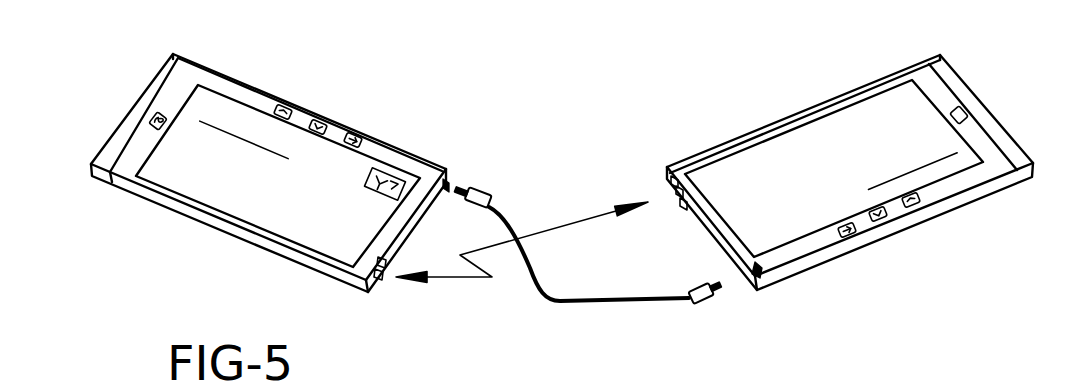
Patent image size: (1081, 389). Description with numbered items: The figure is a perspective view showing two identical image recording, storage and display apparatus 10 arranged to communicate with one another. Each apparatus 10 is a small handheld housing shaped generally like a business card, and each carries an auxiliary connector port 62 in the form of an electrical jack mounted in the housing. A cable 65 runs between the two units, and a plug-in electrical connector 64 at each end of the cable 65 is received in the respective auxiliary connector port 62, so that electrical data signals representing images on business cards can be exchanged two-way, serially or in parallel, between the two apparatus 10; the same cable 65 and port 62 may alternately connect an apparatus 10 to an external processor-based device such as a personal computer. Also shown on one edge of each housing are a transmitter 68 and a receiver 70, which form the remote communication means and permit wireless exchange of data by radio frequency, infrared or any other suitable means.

The image recording, storage and display apparatus 10 is at (362, 122).
The auxiliary connector port 62 is at (431, 172).
The plug-in electrical connector 64 is at (473, 190).
The cable 65 is at (588, 303).
The transmitter 68 is at (382, 268).
The receiver 70 is at (371, 289).